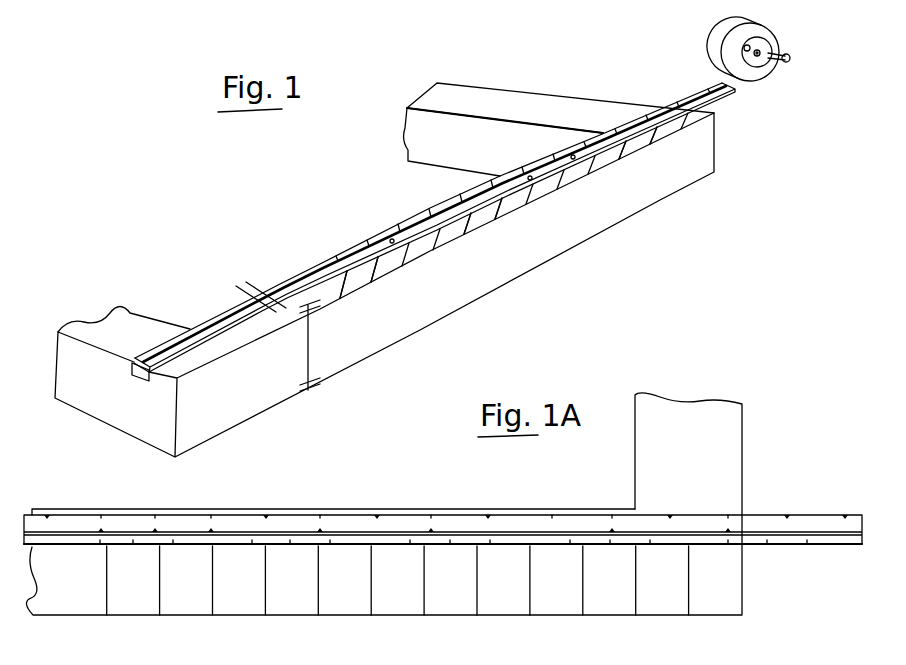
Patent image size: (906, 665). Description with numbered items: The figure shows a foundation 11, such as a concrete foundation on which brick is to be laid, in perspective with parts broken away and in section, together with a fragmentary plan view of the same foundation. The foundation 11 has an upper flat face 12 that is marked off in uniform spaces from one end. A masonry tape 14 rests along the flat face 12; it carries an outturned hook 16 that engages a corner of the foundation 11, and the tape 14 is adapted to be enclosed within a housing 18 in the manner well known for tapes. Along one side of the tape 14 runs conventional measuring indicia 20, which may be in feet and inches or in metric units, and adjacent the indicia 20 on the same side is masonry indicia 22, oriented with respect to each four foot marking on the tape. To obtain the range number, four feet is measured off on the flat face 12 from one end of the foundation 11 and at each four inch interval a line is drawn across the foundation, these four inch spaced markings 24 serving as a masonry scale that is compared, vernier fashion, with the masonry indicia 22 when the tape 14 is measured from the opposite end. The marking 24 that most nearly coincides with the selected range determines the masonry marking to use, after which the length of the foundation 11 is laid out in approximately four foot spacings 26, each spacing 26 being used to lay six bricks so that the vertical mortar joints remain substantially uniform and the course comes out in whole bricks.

In FIG. 1, the foundation 11 is at (722, 166).
In FIG. 1A, the foundation 11 is at (750, 449).
In FIG. 1, the upper flat face 12 is at (212, 319).
In FIG. 1A, the upper flat face 12 is at (635, 481).
In FIG. 1, the masonry tape 14 is at (161, 346).
In FIG. 1A, the masonry tape 14 is at (779, 509).
In FIG. 1, the outturned hook 16 is at (137, 377).
In FIG. 1, the housing 18 is at (722, 23).
In FIG. 1, the conventional measuring indicia 20 is at (403, 242).
In FIG. 1A, the conventional measuring indicia 20 is at (768, 541).
In FIG. 1, the masonry indicia 22 is at (385, 248).
In FIG. 1A, the masonry indicia 22 is at (56, 519).
In FIG. 1, the four-inch interval markings 24 is at (495, 213).
In FIG. 1A, the four-inch interval markings 24 is at (265, 601).
In FIG. 1, the four-foot spacings 26 is at (352, 283).
In FIG. 1A, the four-foot spacings 26 is at (108, 601).